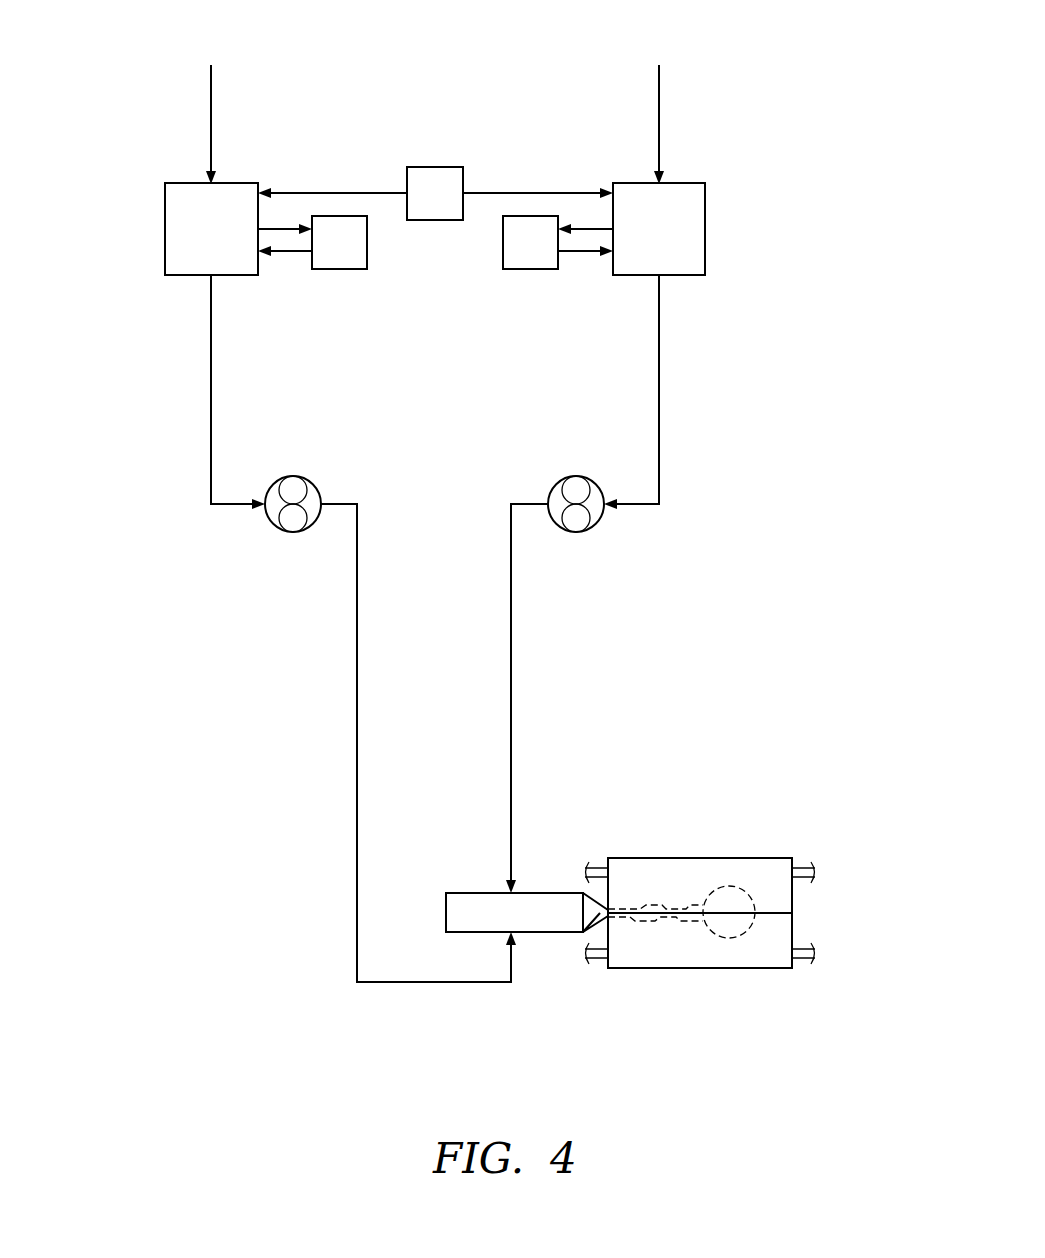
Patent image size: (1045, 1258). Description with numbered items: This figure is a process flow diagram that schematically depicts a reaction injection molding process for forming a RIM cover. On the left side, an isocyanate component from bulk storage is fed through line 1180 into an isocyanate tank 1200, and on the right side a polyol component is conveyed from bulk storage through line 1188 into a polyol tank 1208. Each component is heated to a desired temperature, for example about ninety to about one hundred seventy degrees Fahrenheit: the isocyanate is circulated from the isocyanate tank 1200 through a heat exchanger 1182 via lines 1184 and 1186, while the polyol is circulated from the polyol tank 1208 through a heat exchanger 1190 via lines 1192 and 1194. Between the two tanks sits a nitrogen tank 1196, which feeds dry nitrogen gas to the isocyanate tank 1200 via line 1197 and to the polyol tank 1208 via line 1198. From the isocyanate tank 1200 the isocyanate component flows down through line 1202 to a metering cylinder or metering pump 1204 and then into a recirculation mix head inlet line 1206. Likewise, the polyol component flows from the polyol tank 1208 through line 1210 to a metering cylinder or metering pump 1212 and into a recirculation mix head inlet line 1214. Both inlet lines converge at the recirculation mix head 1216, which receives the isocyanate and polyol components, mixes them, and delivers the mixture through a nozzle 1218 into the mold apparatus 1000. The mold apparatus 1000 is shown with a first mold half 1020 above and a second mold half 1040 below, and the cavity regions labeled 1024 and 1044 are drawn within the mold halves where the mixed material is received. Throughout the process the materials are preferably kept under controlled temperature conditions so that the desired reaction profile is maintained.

The line 1180 is at (213, 96).
The line 1188 is at (660, 96).
The isocyanate tank 1200 is at (165, 230).
The polyol tank 1208 is at (705, 230).
The line 1197 is at (355, 192).
The nitrogen tank 1196 is at (436, 167).
The line 1198 is at (514, 193).
The line 1184 is at (275, 226).
The heat exchanger 1182 is at (367, 243).
The line 1186 is at (293, 253).
The line 1192 is at (598, 226).
The heat exchanger 1190 is at (503, 243).
The line 1194 is at (573, 253).
The line 1202 is at (211, 395).
The metering pump 1204 is at (268, 522).
The recirculation mix head inlet line 1206 is at (357, 753).
The line 1210 is at (659, 398).
The metering pump 1212 is at (585, 530).
The recirculation mix head inlet line 1214 is at (511, 688).
The recirculation mix head 1216 is at (490, 917).
The nozzle 1218 is at (583, 933).
The mold apparatus 1000 is at (751, 896).
The first mold half 1020 is at (680, 870).
The second mold half 1040 is at (687, 955).
The upper mold cavity 1024 is at (752, 892).
The lower mold cavity 1044 is at (755, 922).